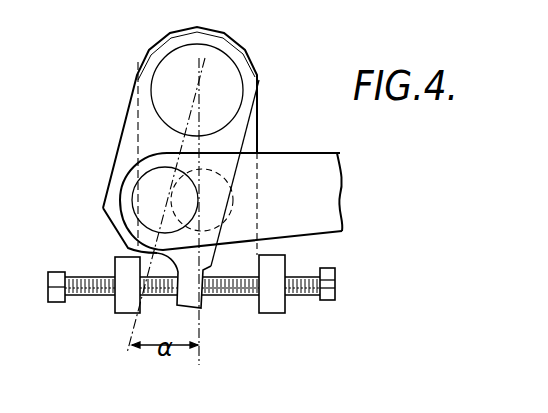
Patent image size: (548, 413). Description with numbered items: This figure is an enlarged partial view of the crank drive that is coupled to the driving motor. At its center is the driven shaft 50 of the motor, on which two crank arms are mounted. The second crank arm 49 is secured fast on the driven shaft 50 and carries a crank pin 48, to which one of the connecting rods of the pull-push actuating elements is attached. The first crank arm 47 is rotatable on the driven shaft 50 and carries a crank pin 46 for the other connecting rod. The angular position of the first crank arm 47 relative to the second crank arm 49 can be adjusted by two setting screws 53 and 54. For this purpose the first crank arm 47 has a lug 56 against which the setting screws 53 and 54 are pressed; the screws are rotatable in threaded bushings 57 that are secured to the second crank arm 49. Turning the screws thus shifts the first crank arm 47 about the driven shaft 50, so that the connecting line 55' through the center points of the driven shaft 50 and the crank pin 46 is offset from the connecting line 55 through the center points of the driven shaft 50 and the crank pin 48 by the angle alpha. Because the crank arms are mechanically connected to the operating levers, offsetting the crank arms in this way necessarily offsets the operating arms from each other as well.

The crank pin 46 is at (145, 182).
The first crank arm 47 is at (132, 132).
The crank pin 48 is at (232, 190).
The second crank arm 49 is at (250, 140).
The driven shaft 50 is at (213, 78).
The setting screw 53 is at (85, 275).
The setting screw 54 is at (337, 272).
The connecting line 55 is at (230, 215).
The connecting line 55' is at (139, 208).
The lug 56 is at (201, 309).
The threaded bushings 57 is at (115, 260).